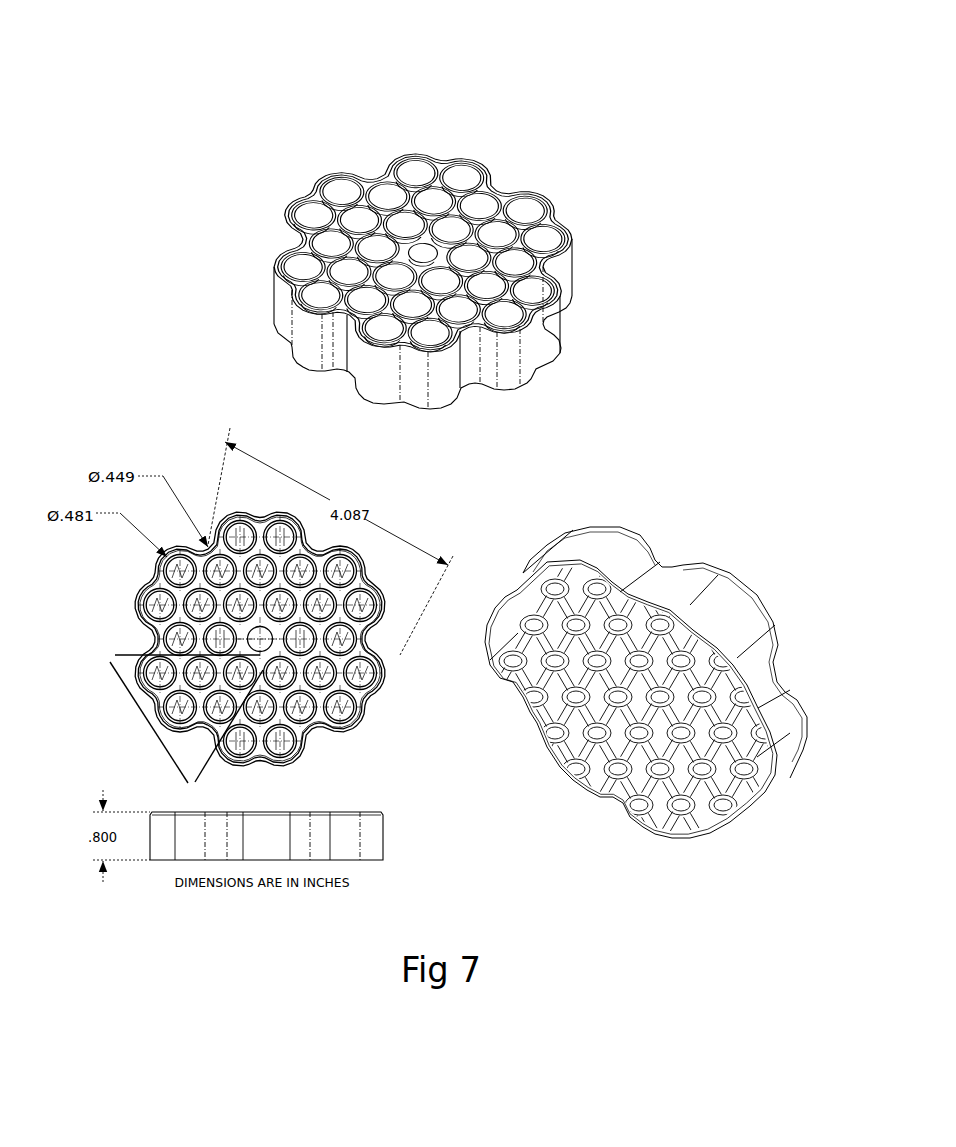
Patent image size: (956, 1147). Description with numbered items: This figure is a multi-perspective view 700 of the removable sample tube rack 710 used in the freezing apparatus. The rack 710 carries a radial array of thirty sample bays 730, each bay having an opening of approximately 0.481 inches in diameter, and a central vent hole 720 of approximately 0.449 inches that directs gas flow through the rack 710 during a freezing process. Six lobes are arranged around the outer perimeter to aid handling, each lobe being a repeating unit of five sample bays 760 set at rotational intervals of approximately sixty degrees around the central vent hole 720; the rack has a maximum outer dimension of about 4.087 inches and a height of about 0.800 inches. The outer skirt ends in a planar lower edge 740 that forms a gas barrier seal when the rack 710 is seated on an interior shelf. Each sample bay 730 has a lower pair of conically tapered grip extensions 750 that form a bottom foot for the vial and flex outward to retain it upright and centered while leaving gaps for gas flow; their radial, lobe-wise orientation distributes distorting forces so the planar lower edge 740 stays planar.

The multi-perspective view 700 is at (493, 237).
The removable sample tube rack 710 is at (551, 214).
The central vent hole 720 is at (428, 259).
The sample bays 730 is at (491, 291).
The planar lower edge 740 is at (654, 713).
The conically tapered grip extensions 750 is at (708, 779).
The repeating unit of 5 sample bays 760 is at (143, 723).